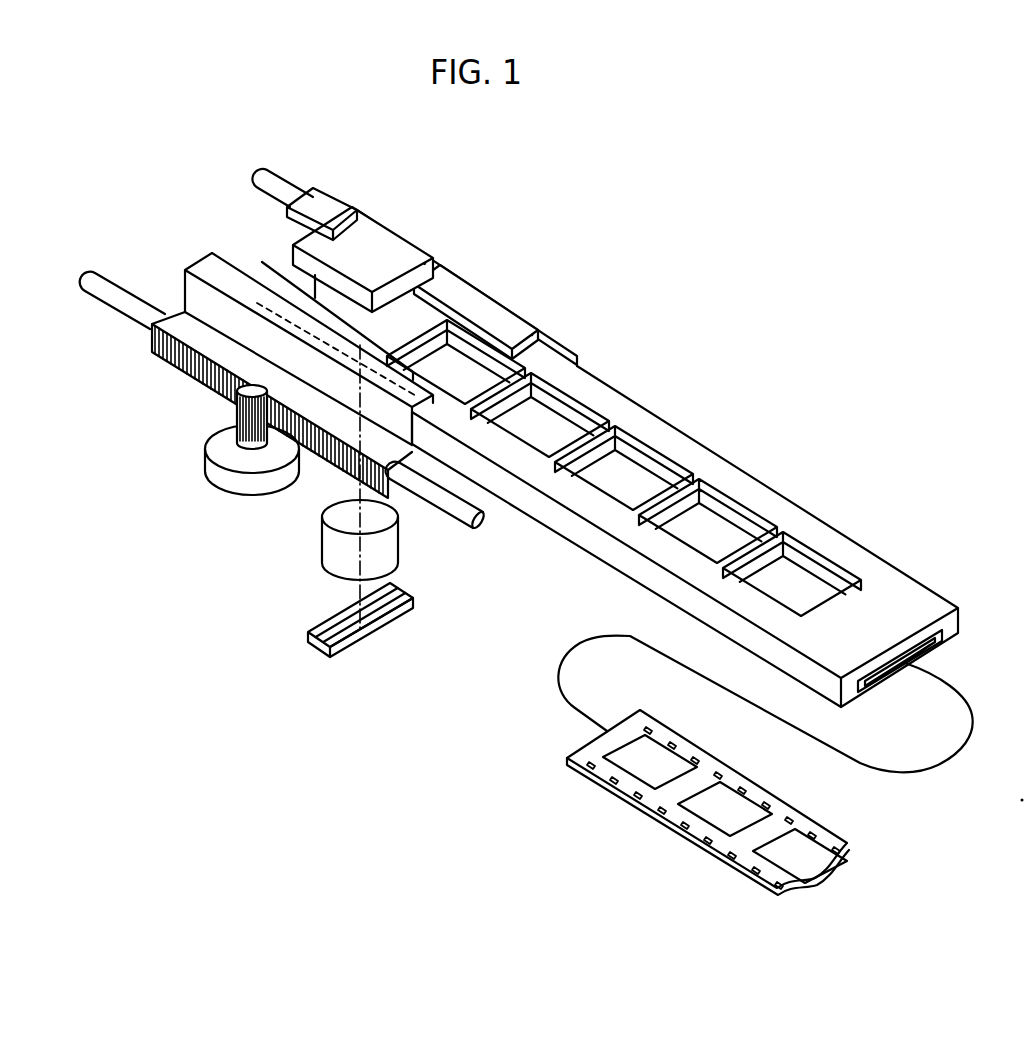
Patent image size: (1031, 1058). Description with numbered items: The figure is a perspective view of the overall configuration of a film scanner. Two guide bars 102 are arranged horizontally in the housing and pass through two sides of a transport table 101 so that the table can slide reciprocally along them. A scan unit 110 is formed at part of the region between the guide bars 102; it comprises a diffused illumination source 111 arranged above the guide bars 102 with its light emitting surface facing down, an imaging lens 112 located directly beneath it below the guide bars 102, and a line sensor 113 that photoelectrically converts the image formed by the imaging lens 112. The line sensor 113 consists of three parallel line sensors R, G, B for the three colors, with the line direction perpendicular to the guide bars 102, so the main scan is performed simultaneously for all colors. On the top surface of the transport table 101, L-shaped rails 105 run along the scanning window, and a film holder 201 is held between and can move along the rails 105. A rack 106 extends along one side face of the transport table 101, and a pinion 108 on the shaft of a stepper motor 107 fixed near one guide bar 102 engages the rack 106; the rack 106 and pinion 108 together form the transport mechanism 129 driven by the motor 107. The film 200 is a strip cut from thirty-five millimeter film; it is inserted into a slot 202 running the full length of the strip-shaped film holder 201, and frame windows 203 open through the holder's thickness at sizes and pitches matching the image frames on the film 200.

The transport table 101 is at (350, 425).
The guide bars 102 is at (288, 188).
The L-shaped rails 105 is at (511, 328).
The rack 106 is at (170, 360).
The stepper motor 107 is at (213, 473).
The pinion 108 is at (237, 408).
The scan unit 110 is at (469, 279).
The diffused illumination source 111 is at (398, 247).
The imaging lens 112 is at (322, 548).
The line sensor 113 is at (355, 638).
The transport mechanism 129 is at (124, 430).
The film 200 is at (808, 821).
The film holder 201 is at (748, 490).
The slot 202 is at (935, 645).
The frame windows 203 is at (640, 470).
The red line sensor R is at (395, 585).
The green line sensor G is at (405, 600).
The blue line sensor B is at (414, 603).